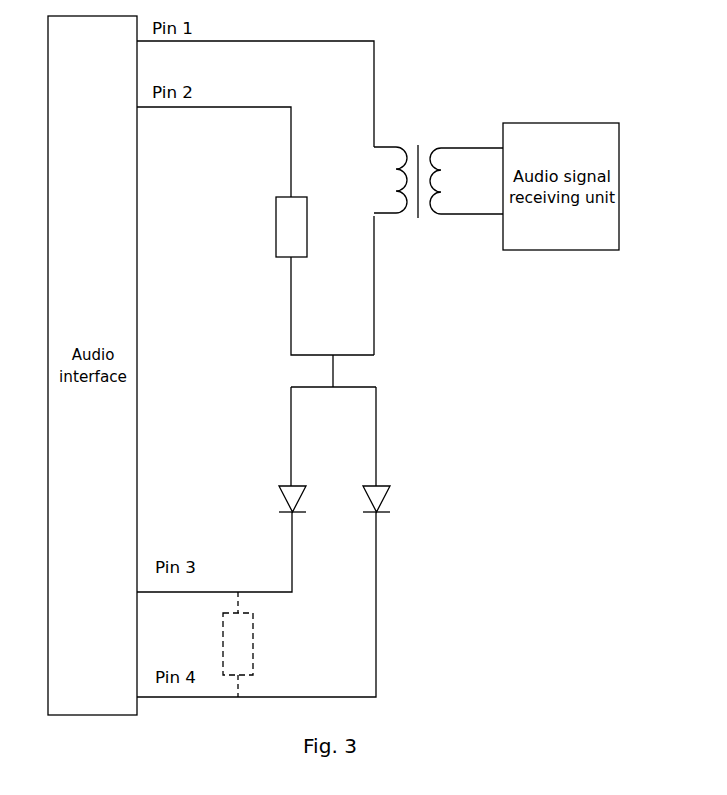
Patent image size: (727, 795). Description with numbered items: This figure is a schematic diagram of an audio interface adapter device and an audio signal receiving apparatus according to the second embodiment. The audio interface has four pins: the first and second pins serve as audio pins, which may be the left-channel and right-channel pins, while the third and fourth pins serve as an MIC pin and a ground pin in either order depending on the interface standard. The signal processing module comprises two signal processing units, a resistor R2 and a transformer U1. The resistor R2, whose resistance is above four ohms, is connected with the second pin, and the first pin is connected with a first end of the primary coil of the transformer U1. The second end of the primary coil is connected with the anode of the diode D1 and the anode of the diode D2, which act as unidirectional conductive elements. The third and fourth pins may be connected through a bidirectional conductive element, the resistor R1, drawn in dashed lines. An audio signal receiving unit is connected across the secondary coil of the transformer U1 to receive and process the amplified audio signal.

The resistor R1 is at (238, 644).
The resistor R2 is at (291, 227).
The diode D1 is at (273, 499).
The diode D2 is at (394, 499).
The transformer U1 is at (438, 197).